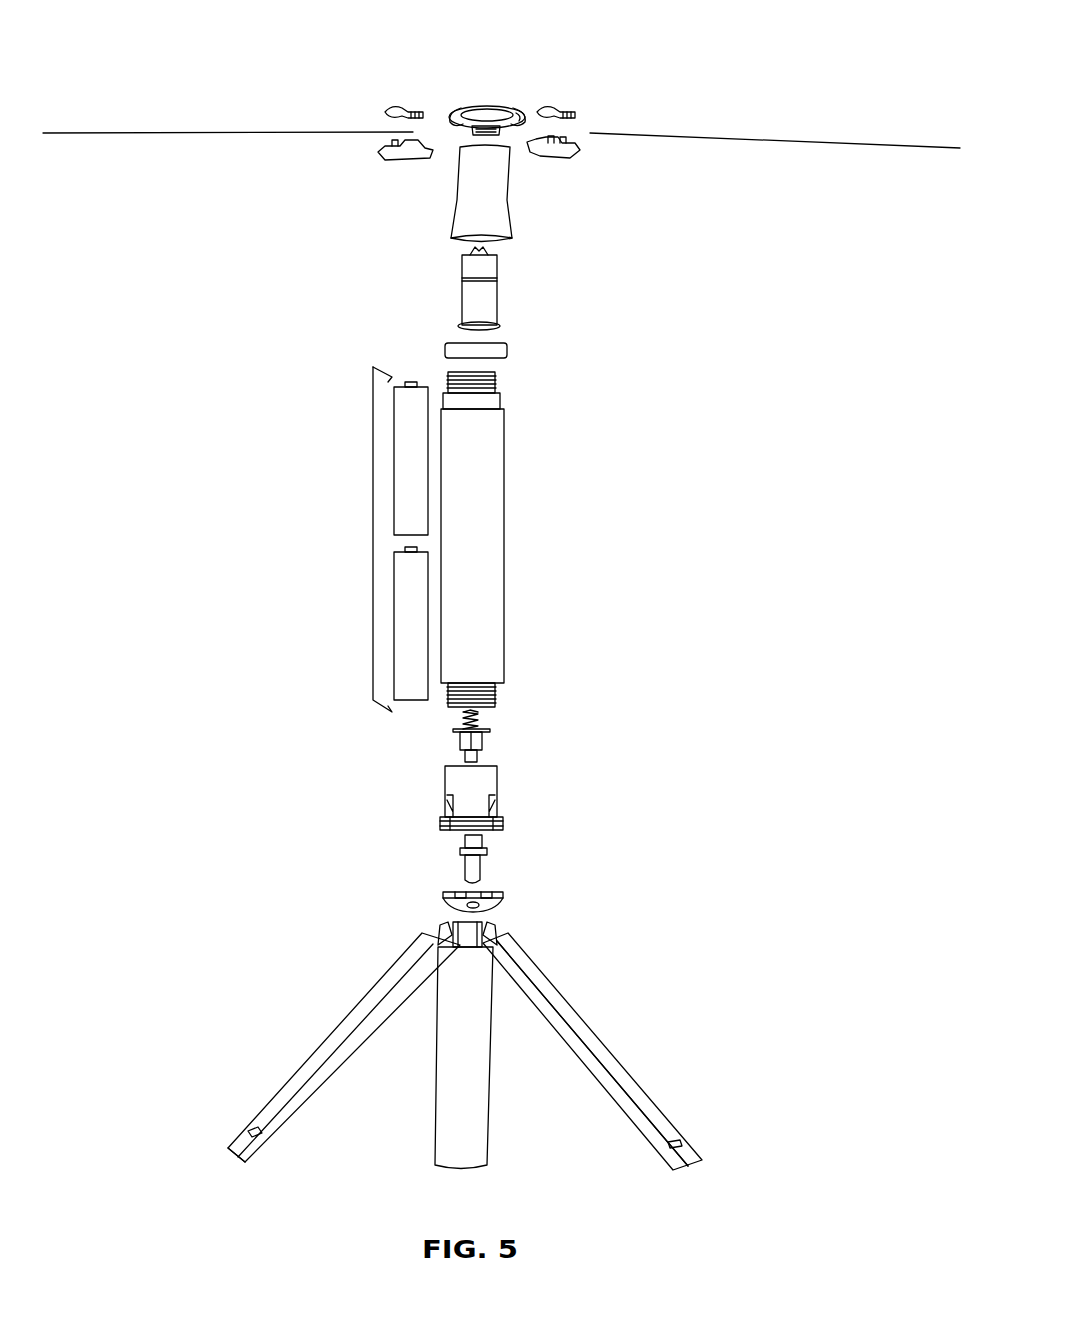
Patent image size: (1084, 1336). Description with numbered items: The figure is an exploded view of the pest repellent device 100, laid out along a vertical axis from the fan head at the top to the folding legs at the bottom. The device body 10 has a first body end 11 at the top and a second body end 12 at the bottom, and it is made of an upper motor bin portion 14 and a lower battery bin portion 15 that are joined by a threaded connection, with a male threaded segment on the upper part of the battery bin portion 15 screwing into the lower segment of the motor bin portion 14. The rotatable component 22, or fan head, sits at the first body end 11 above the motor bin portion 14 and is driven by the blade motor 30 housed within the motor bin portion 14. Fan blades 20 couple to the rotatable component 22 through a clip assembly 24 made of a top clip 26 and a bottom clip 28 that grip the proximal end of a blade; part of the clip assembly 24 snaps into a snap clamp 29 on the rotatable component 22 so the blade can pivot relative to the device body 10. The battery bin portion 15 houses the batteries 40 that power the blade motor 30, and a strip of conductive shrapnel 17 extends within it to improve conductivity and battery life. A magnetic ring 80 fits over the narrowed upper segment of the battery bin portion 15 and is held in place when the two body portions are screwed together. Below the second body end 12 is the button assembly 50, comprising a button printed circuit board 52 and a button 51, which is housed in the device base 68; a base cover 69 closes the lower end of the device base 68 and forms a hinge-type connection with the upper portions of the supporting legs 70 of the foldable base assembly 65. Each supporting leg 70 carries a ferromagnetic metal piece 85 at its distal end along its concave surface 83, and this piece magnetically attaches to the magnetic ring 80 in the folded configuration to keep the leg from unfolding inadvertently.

The pest repellent device 100 is at (146, 65).
The fan blades 20 is at (228, 131).
The clip assembly 24 is at (526, 119).
The rotatable component 22 is at (485, 117).
The snap clamp 29 is at (515, 118).
The top clip 26 is at (555, 108).
The bottom clip 28 is at (542, 156).
The upper motor bin portion 14 is at (465, 212).
The first body end 11 is at (580, 256).
The blade motor 30 is at (490, 290).
The magnetic ring 80 is at (508, 353).
The conductive shrapnel 17 is at (372, 418).
The batteries 40 is at (397, 388).
The device body 10 is at (520, 539).
The lower battery bin portion 15 is at (500, 575).
The second body end 12 is at (577, 692).
The button assembly 50 is at (466, 770).
The button printed circuit board 52 is at (482, 737).
The device base 68 is at (453, 790).
The foldable base assembly 65 is at (503, 1002).
The button 51 is at (476, 870).
The base cover 69 is at (498, 905).
The supporting legs 70 is at (503, 1046).
The concave surface 83 is at (555, 992).
The ferromagnetic metal piece 85 is at (682, 1142).